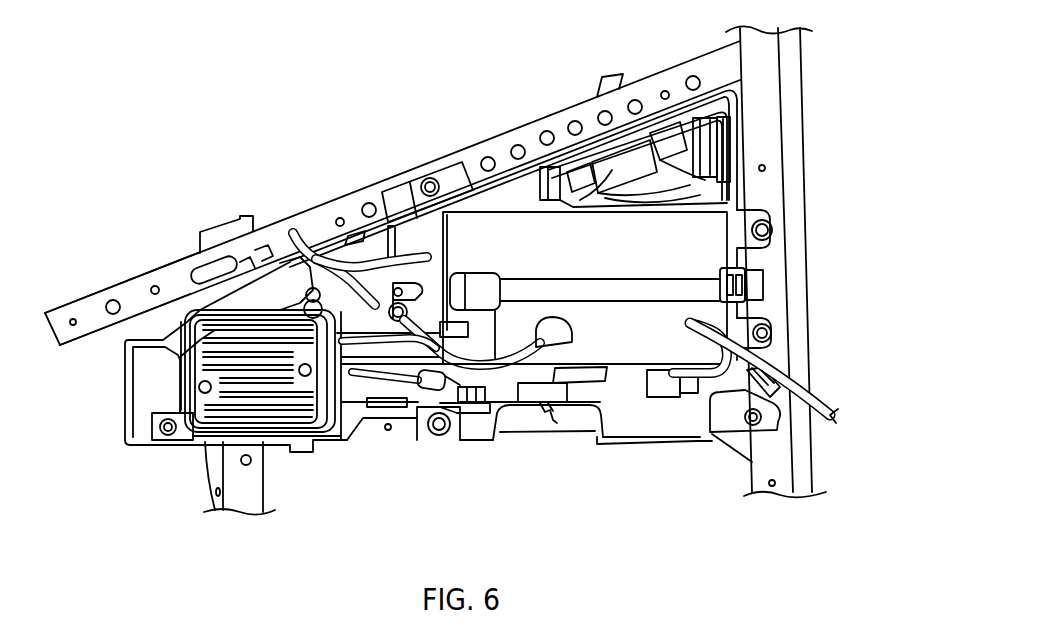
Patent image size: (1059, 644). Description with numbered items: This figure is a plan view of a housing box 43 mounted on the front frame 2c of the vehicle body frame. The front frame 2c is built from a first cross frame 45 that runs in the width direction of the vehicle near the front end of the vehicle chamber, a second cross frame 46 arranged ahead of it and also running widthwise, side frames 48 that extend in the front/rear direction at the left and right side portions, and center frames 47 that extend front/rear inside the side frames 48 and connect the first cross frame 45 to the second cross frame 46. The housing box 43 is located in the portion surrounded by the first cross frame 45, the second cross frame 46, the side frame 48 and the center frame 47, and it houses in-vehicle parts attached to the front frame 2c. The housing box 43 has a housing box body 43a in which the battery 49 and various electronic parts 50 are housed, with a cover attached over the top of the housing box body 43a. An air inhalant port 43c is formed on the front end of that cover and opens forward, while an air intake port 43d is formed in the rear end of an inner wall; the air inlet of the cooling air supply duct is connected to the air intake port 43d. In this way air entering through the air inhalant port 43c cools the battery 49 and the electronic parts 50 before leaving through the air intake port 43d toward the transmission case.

The front frame 2c is at (138, 268).
The side frame 48 is at (561, 108).
The first cross frame 45 is at (804, 143).
The electronic parts 50 is at (275, 305).
The housing box 43 is at (573, 447).
The housing box body 43a is at (515, 442).
The air inhalant port 43c is at (127, 398).
The air intake port 43d is at (703, 390).
The second cross frame 46 is at (266, 493).
The center frame 47 is at (385, 437).
The battery 49 is at (637, 350).